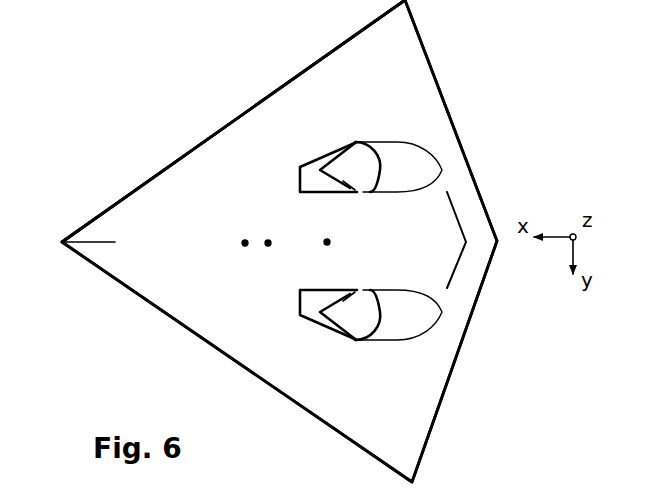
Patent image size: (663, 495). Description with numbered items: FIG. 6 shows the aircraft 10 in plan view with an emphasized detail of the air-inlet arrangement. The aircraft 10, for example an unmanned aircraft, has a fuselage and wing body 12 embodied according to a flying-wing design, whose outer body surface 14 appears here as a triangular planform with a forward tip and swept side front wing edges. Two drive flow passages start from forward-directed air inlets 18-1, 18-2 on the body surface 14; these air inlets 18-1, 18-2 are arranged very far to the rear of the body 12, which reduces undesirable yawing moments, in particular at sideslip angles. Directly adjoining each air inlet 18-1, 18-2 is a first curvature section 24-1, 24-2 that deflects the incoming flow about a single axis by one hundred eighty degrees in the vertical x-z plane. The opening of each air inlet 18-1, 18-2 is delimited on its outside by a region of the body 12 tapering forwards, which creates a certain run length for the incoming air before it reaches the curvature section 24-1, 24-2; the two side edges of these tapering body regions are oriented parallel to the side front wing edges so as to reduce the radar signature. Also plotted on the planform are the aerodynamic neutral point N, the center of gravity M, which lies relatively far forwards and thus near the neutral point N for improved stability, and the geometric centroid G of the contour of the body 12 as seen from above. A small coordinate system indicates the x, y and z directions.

The aircraft 10 is at (77, 99).
The fuselage and wing body 12 is at (215, 161).
The body surface 14 is at (156, 202).
The air inlet 18-1 is at (369, 340).
The air inlet 18-2 is at (367, 138).
The first curvature section 24-1 is at (330, 330).
The first curvature section 24-2 is at (334, 152).
The aerodynamic neutral point N is at (244, 231).
The center of gravity M is at (267, 231).
The geometric centroid G is at (326, 230).